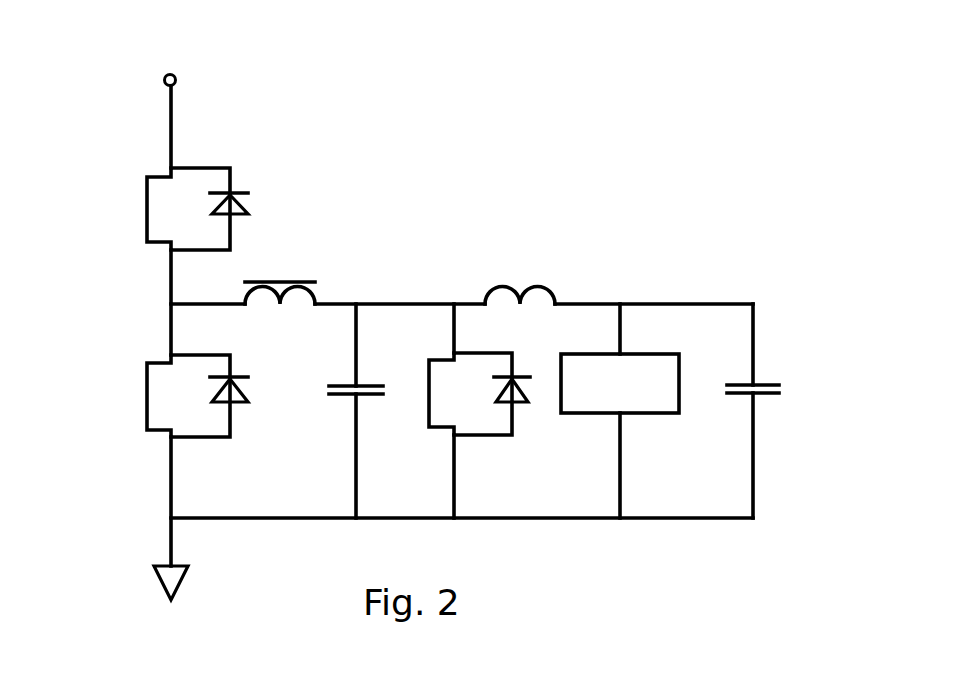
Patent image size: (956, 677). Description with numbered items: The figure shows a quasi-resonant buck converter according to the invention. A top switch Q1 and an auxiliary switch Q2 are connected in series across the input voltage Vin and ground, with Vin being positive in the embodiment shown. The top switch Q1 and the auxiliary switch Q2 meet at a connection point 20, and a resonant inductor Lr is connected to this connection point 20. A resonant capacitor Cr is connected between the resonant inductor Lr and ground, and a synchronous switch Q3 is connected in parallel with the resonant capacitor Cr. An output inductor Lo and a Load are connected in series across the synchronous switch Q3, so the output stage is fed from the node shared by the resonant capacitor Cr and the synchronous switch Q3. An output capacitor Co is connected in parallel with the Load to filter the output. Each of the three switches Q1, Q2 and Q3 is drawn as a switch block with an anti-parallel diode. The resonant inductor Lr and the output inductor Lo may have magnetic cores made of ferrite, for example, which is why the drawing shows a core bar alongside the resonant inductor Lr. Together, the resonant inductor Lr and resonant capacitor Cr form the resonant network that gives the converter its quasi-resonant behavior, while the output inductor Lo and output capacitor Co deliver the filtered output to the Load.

The connection point 20 is at (171, 304).
The input voltage Vin is at (198, 116).
The top switch Q1 is at (197, 261).
The auxiliary switch Q2 is at (197, 460).
The synchronous switch Q3 is at (479, 411).
The resonant inductor Lr is at (289, 283).
The resonant capacitor Cr is at (352, 395).
The output inductor Lo is at (531, 288).
The output capacitor Co is at (748, 394).
The load Load is at (620, 411).